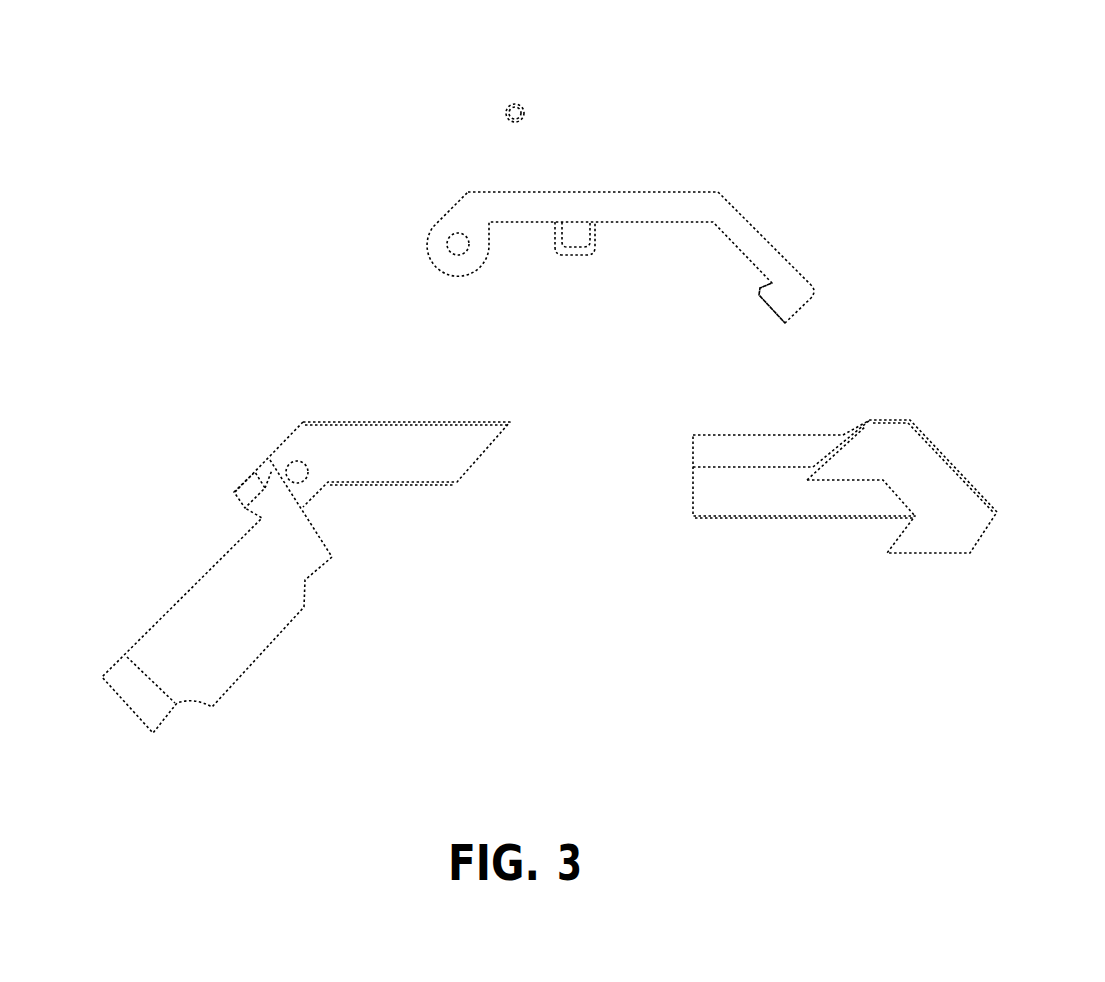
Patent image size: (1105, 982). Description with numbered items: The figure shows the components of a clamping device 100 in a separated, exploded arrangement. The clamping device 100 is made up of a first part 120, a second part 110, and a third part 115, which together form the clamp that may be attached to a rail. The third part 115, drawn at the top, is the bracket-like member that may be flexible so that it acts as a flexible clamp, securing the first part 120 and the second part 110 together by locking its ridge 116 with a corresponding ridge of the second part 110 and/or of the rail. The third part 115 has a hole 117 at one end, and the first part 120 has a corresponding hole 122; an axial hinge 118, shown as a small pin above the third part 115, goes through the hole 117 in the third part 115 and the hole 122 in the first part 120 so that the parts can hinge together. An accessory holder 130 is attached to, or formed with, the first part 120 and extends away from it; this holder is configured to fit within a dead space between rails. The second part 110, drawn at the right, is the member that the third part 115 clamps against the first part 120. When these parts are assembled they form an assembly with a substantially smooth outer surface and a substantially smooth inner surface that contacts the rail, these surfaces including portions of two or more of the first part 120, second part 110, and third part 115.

The clamping device 100 is at (1004, 70).
The second part 110 is at (930, 530).
The third part 115 is at (742, 223).
The ridge 116 is at (758, 292).
The hole 117 is at (453, 249).
The axial hinge 118 is at (500, 108).
The first part 120 is at (383, 437).
The hole 122 is at (302, 473).
The accessory holder 130 is at (178, 628).